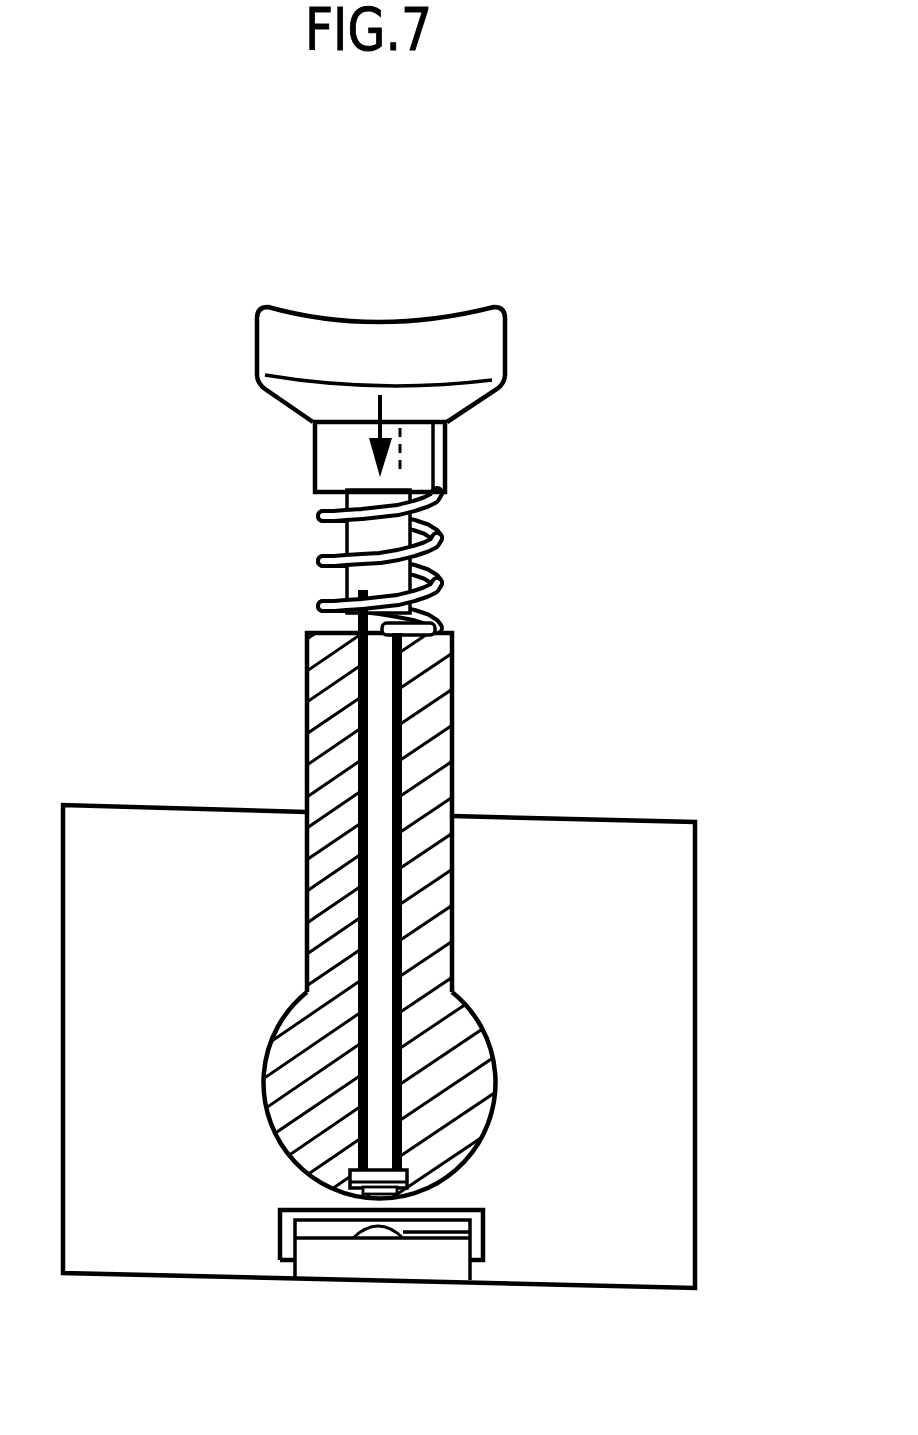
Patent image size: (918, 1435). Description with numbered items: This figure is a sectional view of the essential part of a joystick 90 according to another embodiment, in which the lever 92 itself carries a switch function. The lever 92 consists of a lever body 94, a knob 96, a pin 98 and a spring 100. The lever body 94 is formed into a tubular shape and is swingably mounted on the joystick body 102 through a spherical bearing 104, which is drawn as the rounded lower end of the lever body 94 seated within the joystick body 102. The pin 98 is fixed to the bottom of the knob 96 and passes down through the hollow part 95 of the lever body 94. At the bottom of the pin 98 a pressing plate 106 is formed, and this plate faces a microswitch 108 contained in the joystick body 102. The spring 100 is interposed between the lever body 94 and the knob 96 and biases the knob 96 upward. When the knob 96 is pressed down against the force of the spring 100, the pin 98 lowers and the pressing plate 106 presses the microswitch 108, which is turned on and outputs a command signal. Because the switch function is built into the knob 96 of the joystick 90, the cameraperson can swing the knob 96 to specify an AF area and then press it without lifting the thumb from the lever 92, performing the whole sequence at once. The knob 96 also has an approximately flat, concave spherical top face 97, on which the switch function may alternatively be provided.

The joystick 90 is at (662, 452).
The lever 92 is at (512, 672).
The lever body 94 is at (455, 768).
The hollow part 95 is at (378, 892).
The knob 96 is at (487, 348).
The top face 97 is at (378, 320).
The pin 98 is at (380, 733).
The spring 100 is at (301, 827).
The joystick body 102 is at (658, 997).
The spherical bearing 104 is at (493, 1110).
The pressing plate 106 is at (370, 1205).
The microswitch 108 is at (483, 1230).